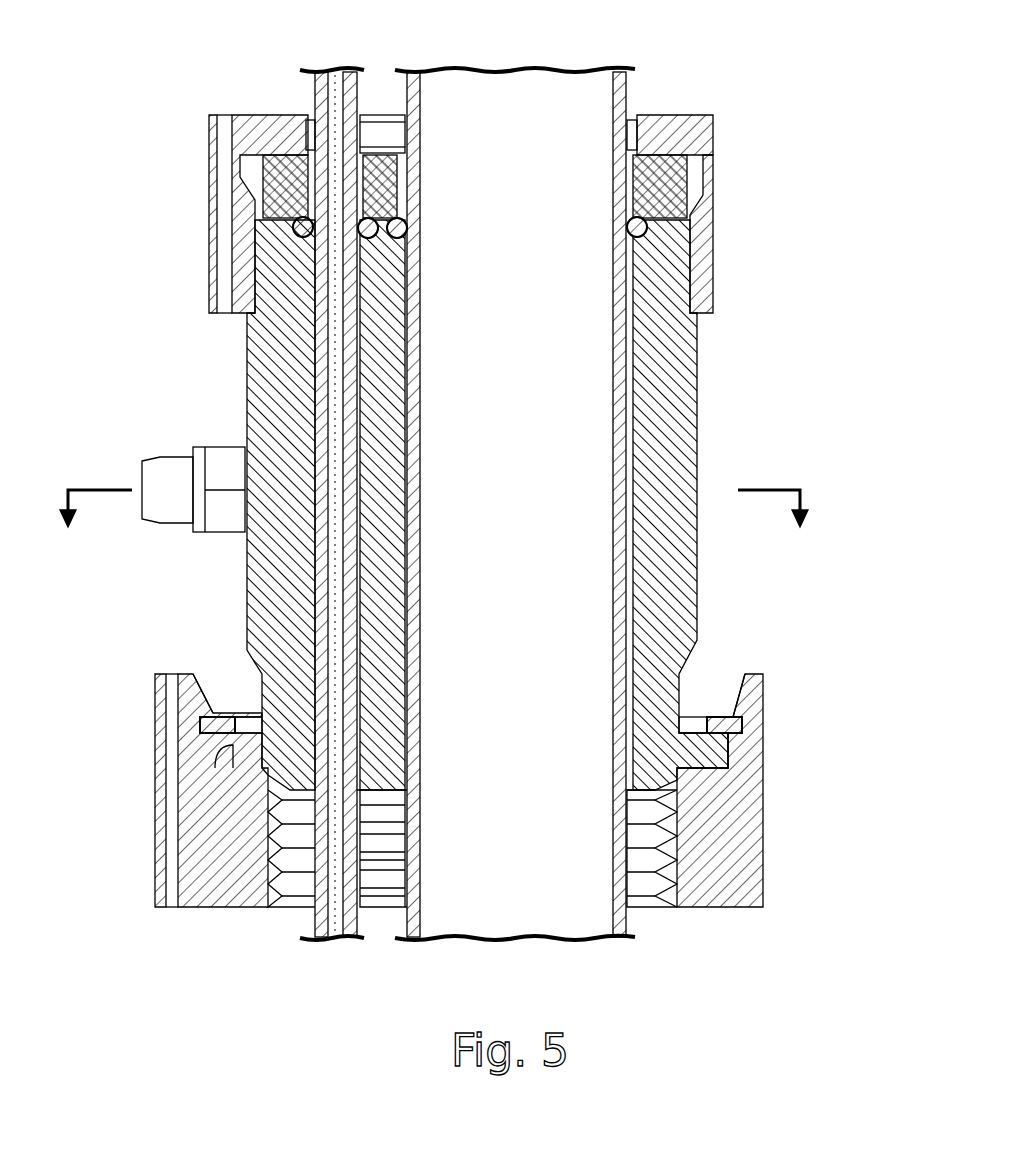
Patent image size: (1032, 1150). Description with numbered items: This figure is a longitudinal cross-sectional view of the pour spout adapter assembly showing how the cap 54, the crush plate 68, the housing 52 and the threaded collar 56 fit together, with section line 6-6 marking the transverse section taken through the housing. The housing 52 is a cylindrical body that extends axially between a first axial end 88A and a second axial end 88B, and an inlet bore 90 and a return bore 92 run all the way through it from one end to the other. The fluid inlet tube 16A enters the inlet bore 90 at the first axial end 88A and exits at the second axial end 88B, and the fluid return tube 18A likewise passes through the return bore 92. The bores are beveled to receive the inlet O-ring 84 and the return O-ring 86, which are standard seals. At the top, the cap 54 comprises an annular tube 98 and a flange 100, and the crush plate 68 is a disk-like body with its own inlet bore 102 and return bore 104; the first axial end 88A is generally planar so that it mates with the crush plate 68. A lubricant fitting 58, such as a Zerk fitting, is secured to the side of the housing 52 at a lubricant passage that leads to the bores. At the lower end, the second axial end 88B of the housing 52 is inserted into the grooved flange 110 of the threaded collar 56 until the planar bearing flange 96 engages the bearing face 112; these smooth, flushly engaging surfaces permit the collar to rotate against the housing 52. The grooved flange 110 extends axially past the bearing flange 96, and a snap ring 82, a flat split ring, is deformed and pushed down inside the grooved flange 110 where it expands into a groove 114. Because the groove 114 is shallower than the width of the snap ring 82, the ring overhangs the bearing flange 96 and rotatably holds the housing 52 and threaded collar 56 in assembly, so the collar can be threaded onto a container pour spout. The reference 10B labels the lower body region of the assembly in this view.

The section line 6- 6 is at (432, 503).
The housing block 10B is at (166, 820).
The fluid inlet tube 16A is at (312, 922).
The fluid return tube 18A is at (612, 910).
The housing 52 is at (735, 601).
The cap 54 is at (674, 157).
The threaded collar 56 is at (765, 765).
The lubricant fitting 58 is at (176, 534).
The crush plate 68 is at (402, 167).
The snap ring 82 is at (722, 717).
The inlet O-ring 84 is at (693, 157).
The return O-ring 86 is at (293, 229).
The first axial end 88A is at (690, 205).
The second axial end 88B is at (660, 882).
The inlet bore 90 is at (632, 400).
The return bore 92 is at (318, 355).
The bearing flange 96 is at (718, 750).
The annular tube 98 is at (700, 270).
The flange 100 is at (672, 132).
The inlet bore 102 is at (633, 173).
The return bore 104 is at (306, 166).
The grooved flange 110 is at (195, 695).
The bearing face 112 is at (218, 752).
The groove 114 is at (745, 725).